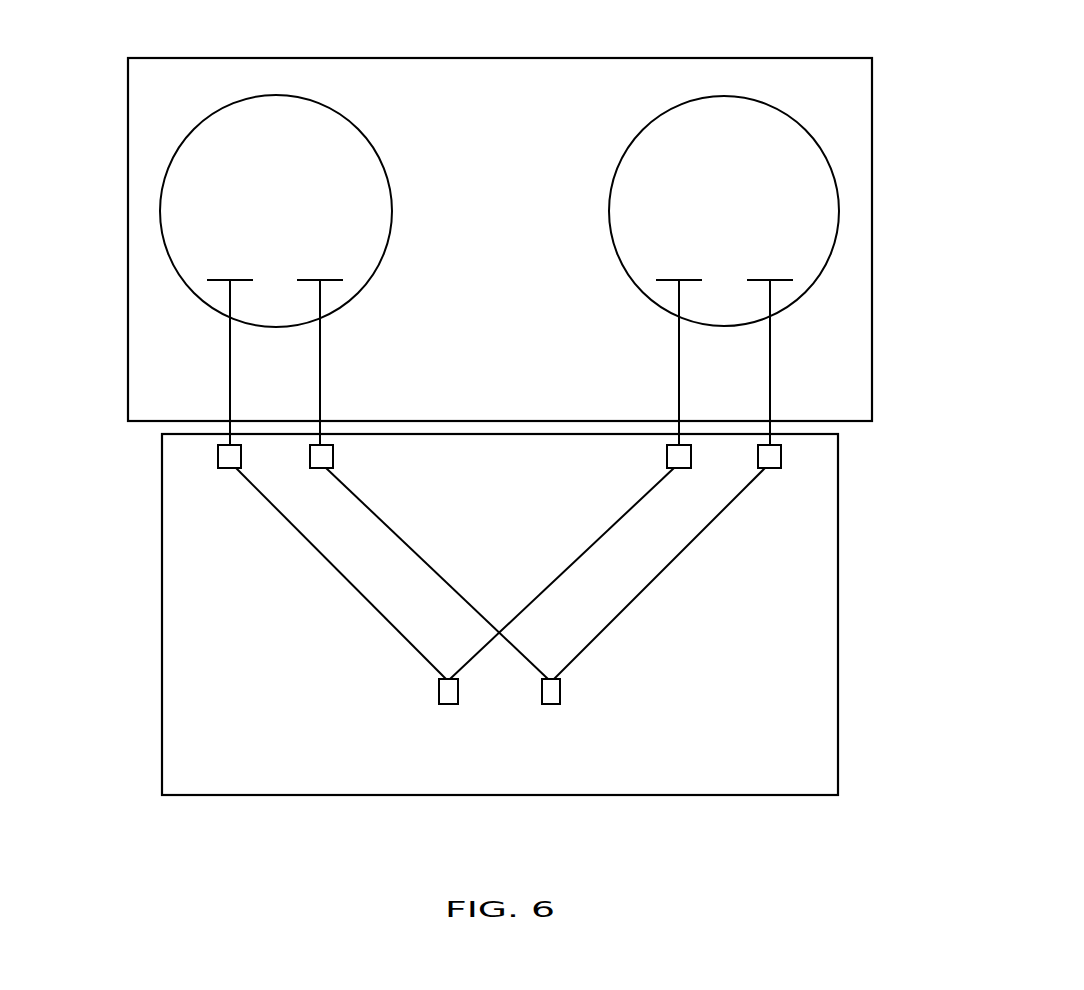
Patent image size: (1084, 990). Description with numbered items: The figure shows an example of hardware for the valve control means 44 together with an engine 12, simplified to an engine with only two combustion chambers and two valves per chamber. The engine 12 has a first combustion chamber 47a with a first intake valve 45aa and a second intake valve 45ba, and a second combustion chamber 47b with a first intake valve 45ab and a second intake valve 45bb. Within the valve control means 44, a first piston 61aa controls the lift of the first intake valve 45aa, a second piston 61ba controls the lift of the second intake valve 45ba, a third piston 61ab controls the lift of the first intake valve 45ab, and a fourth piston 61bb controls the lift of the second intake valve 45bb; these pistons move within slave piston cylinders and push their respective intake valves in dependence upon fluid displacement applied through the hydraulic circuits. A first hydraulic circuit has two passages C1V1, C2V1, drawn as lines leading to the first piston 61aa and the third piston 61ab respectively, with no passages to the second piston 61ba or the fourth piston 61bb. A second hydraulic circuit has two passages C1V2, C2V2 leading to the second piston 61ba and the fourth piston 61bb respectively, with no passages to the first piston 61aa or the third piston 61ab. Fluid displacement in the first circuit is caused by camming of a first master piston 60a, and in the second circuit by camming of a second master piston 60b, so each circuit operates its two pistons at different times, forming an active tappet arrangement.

The engine 12 is at (872, 238).
The valve control means 44 is at (838, 603).
The first combustion chamber 47a is at (370, 143).
The second combustion chamber 47b is at (630, 143).
The first intake valve of the first combustion chamber 45aa is at (230, 363).
The second intake valve of the first combustion chamber 45ba is at (320, 363).
The first intake valve of the second combustion chamber 45ab is at (679, 363).
The second intake valve of the second combustion chamber 45bb is at (770, 363).
The first piston 61aa is at (218, 456).
The second piston 61ba is at (333, 456).
The third piston 61ab is at (667, 456).
The fourth piston 61bb is at (781, 456).
The first hydraulic circuit passage C1V1 is at (303, 540).
The second hydraulic circuit passage C1V2 is at (433, 567).
The first hydraulic circuit passage C2V1 is at (617, 522).
The second hydraulic circuit passage C2V2 is at (698, 538).
The first master piston 60a is at (439, 692).
The second master piston 60b is at (560, 692).